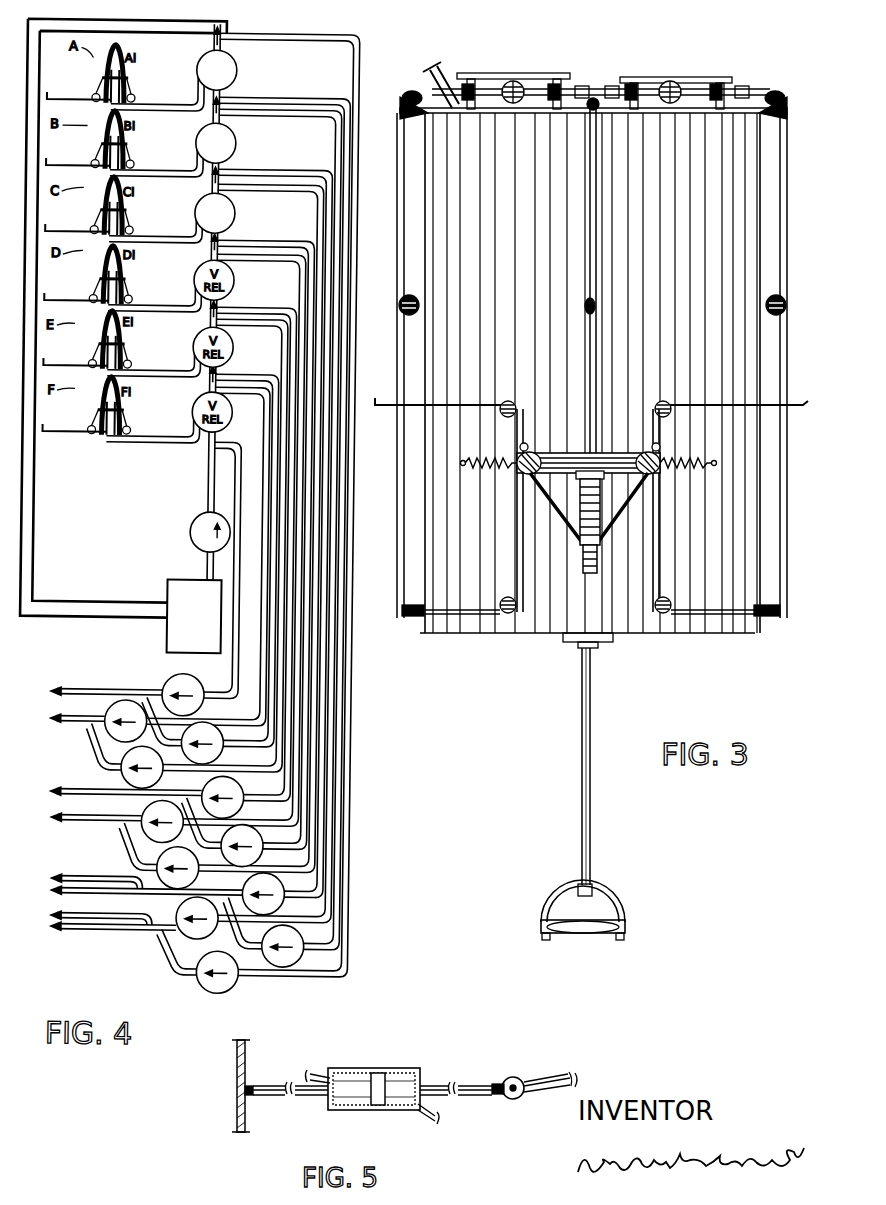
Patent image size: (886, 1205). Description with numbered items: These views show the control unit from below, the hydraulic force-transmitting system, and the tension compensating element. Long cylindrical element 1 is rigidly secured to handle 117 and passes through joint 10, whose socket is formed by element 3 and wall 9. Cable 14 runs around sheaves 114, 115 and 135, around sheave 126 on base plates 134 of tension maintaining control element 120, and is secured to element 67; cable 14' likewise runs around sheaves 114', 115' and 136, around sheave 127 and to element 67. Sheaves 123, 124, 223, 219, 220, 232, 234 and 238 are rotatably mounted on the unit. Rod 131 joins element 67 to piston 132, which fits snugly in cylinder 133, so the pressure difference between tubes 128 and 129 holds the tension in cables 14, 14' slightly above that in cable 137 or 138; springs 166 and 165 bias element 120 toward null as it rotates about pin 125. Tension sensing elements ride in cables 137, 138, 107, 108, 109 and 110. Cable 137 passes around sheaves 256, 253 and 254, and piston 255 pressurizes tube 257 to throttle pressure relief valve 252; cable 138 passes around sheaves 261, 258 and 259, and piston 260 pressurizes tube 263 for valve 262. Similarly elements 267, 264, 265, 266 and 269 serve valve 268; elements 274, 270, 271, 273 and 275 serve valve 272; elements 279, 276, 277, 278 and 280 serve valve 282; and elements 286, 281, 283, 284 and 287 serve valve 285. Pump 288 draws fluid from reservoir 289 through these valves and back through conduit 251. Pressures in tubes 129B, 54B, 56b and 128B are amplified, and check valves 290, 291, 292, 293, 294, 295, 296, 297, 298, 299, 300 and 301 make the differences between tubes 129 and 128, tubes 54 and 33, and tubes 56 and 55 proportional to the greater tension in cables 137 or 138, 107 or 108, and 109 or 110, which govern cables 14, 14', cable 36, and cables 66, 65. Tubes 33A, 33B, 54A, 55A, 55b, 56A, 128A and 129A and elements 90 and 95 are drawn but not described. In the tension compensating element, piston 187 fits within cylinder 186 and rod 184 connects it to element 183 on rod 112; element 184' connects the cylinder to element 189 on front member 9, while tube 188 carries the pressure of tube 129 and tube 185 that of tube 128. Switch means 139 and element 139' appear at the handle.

In FIG. 3, the long cylindrical element 1 is at (592, 700).
In FIG. 3, the socket element 3 is at (614, 641).
In FIG. 5, the front member 9 is at (235, 1098).
In FIG. 3, the joint element 10 is at (582, 650).
In FIG. 3, the cable 14 is at (462, 601).
In FIG. 3, the cable 14' is at (713, 601).
In FIG. 3, the cable 36 is at (596, 200).
In FIG. 3, the cable 65 is at (787, 196).
In FIG. 3, the cable 66 is at (398, 198).
In FIG. 3, the element 67 is at (583, 558).
In FIG. 3, the valve assembly 90 is at (508, 76).
In FIG. 3, the valve assembly 95 is at (674, 76).
In FIG. 4, the cable 107 is at (52, 235).
In FIG. 4, the cable 108 is at (52, 304).
In FIG. 4, the cable 109 is at (52, 369).
In FIG. 4, the cable 110 is at (52, 435).
In FIG. 5, the rod 112 is at (534, 1072).
In FIG. 3, the sheave 114 is at (423, 592).
In FIG. 3, the sheave 114' is at (754, 592).
In FIG. 3, the sheave 115 is at (391, 629).
In FIG. 3, the sheave 115' is at (788, 630).
In FIG. 3, the handle 117 is at (650, 891).
In FIG. 3, the tension maintaining control element 120 is at (602, 423).
In FIG. 3, the sheave 123 is at (504, 412).
In FIG. 3, the sheave 124 is at (670, 416).
In FIG. 3, the pin 125 is at (590, 453).
In FIG. 3, the sheave 126 is at (532, 448).
In FIG. 3, the sheave 127 is at (650, 448).
In FIG. 4, the tube 128 is at (112, 914).
In FIG. 3, the tube 128 is at (570, 514).
In FIG. 4, the tube 129 is at (84, 876).
In FIG. 3, the tube 129 is at (598, 466).
In FIG. 3, the rod 131 is at (602, 537).
In FIG. 3, the piston 132 is at (605, 496).
In FIG. 3, the cylinder 133 is at (603, 515).
In FIG. 3, the base plates 134 is at (599, 556).
In FIG. 3, the sheave 135 is at (502, 598).
In FIG. 3, the sheave 136 is at (666, 598).
In FIG. 4, the cable 137 is at (52, 102).
In FIG. 3, the cable 137 is at (472, 400).
In FIG. 4, the cable 138 is at (52, 168).
In FIG. 3, the cable 138 is at (684, 400).
In FIG. 3, the switch means 139 is at (637, 945).
In FIG. 3, the foot 139' is at (536, 945).
In FIG. 3, the spring 165 is at (688, 468).
In FIG. 3, the spring 166 is at (484, 467).
In FIG. 5, the element 183 is at (512, 1077).
In FIG. 5, the rod 184 is at (456, 1070).
In FIG. 5, the element 184' is at (290, 1100).
In FIG. 4, the tube 185 is at (121, 934).
In FIG. 5, the tube 185 is at (440, 1118).
In FIG. 5, the cylinder 186 is at (344, 1068).
In FIG. 5, the piston 187 is at (378, 1073).
In FIG. 4, the tube 188 is at (101, 896).
In FIG. 5, the tube 188 is at (318, 1068).
In FIG. 5, the element 189 is at (250, 1084).
In FIG. 3, the sheave 219 is at (786, 308).
In FIG. 3, the sheave 220 is at (399, 308).
In FIG. 3, the sheave 223 is at (596, 300).
In FIG. 3, the sheave 232 is at (406, 98).
In FIG. 3, the sheave 234 is at (784, 96).
In FIG. 3, the sheave 238 is at (598, 112).
In FIG. 4, the conduit 251 is at (144, 21).
In FIG. 4, the pressure relief valve 252 is at (236, 65).
In FIG. 4, the sheave 253 is at (122, 54).
In FIG. 4, the sheave 254 is at (90, 81).
In FIG. 4, the piston 255 is at (141, 83).
In FIG. 4, the sheave 256 is at (135, 97).
In FIG. 4, the tube 257 is at (180, 116).
In FIG. 4, the sheave 258 is at (105, 121).
In FIG. 4, the sheave 259 is at (85, 147).
In FIG. 4, the piston 260 is at (140, 150).
In FIG. 4, the sheave 261 is at (132, 163).
In FIG. 4, the pressure relief valve 262 is at (236, 140).
In FIG. 4, the tube 263 is at (192, 186).
In FIG. 4, the sheave 264 is at (108, 189).
In FIG. 4, the sheave 265 is at (84, 215).
In FIG. 4, the piston 266 is at (139, 216).
In FIG. 4, the sheave 267 is at (129, 230).
In FIG. 4, the pressure relief valve 268 is at (236, 209).
In FIG. 4, the tube 269 is at (198, 249).
In FIG. 4, the sheave 270 is at (106, 257).
In FIG. 4, the sheave 271 is at (84, 283).
In FIG. 4, the pressure relief valve 272 is at (194, 292).
In FIG. 4, the piston 273 is at (138, 283).
In FIG. 4, the sheave 274 is at (128, 297).
In FIG. 4, the tube 275 is at (198, 314).
In FIG. 4, the sheave 276 is at (106, 326).
In FIG. 4, the sheave 277 is at (84, 349).
In FIG. 4, the piston 278 is at (136, 349).
In FIG. 4, the sheave 279 is at (124, 362).
In FIG. 4, the tube 280 is at (190, 383).
In FIG. 4, the sheave 281 is at (104, 389).
In FIG. 4, the pressure relief valve 282 is at (198, 357).
In FIG. 4, the sheave 283 is at (82, 414).
In FIG. 4, the piston 284 is at (134, 416).
In FIG. 4, the pressure relief valve 285 is at (194, 425).
In FIG. 4, the sheave 286 is at (124, 432).
In FIG. 4, the tube 287 is at (143, 452).
In FIG. 4, the pump 288 is at (193, 528).
In FIG. 4, the reservoir 289 is at (174, 580).
In FIG. 4, the check valve 290 is at (168, 678).
In FIG. 4, the check valve 291 is at (110, 712).
In FIG. 4, the check valve 292 is at (220, 732).
In FIG. 4, the check valve 293 is at (141, 751).
In FIG. 4, the check valve 294 is at (242, 780).
In FIG. 4, the check valve 295 is at (148, 811).
In FIG. 4, the check valve 296 is at (259, 832).
In FIG. 4, the check valve 297 is at (200, 883).
In FIG. 4, the check valve 298 is at (285, 909).
In FIG. 4, the check valve 299 is at (219, 937).
In FIG. 4, the check valve 300 is at (308, 962).
In FIG. 4, the check valve 301 is at (240, 990).
In FIG. 4, the tube 33 is at (106, 786).
In FIG. 4, the hydraulic line 33A is at (251, 244).
In FIG. 4, the hydraulic line 33B is at (241, 308).
In FIG. 4, the tube 54 is at (83, 822).
In FIG. 4, the hydraulic line 54A is at (265, 189).
In FIG. 4, the tube 54B is at (252, 256).
In FIG. 4, the tube 55 is at (118, 684).
In FIG. 4, the hydraulic line 55A is at (232, 375).
In FIG. 4, the hydraulic line 55b is at (234, 681).
In FIG. 4, the tube 56 is at (70, 722).
In FIG. 4, the hydraulic line 56A is at (232, 318).
In FIG. 4, the tube 56b is at (228, 424).
In FIG. 4, the hydraulic line 128A is at (267, 38).
In FIG. 4, the tube 128B is at (267, 114).
In FIG. 4, the hydraulic line 129A is at (268, 101).
In FIG. 4, the tube 129B is at (267, 172).